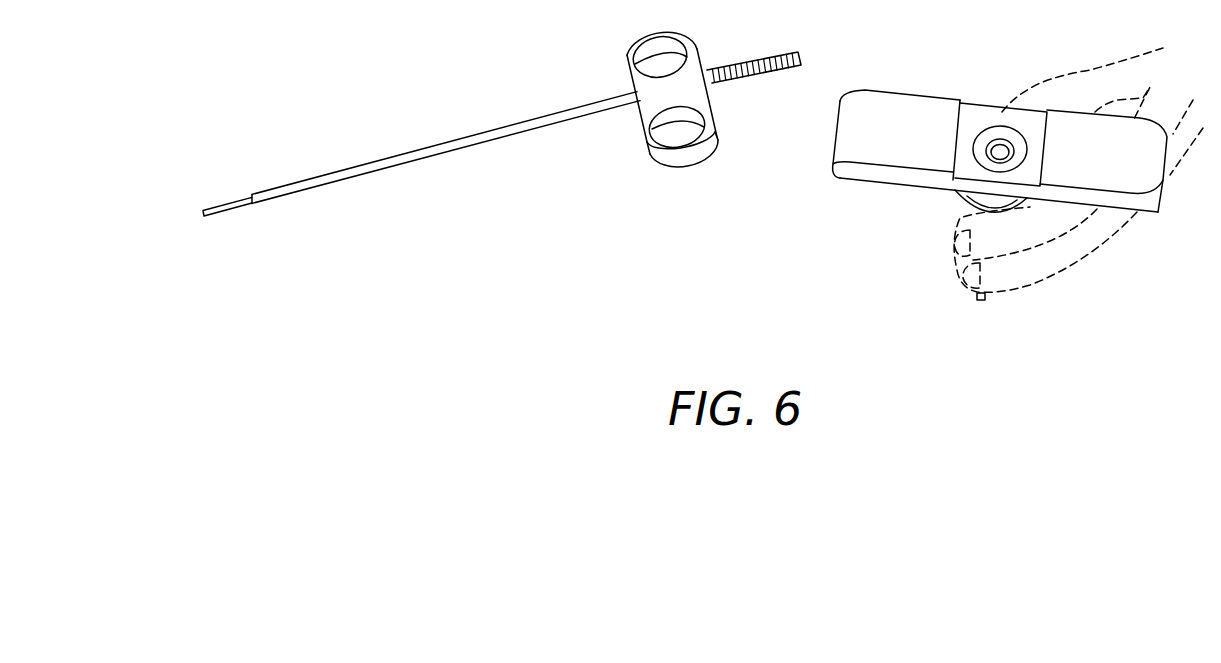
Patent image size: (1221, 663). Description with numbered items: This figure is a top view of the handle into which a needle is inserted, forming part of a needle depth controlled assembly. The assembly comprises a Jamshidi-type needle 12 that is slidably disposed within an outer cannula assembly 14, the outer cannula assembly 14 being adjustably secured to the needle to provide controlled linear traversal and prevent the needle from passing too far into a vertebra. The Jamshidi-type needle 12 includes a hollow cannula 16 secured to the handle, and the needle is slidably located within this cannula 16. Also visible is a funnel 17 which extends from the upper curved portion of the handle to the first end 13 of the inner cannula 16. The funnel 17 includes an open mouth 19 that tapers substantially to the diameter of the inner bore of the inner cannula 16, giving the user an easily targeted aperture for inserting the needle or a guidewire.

The Jamshidi-type needle 12 is at (865, 177).
The first end of the inner cannula 13 is at (1045, 281).
The outer cannula assembly 14 is at (482, 133).
The cannula 16 is at (997, 153).
The funnel 17 is at (979, 300).
The open mouth 19 is at (1102, 191).